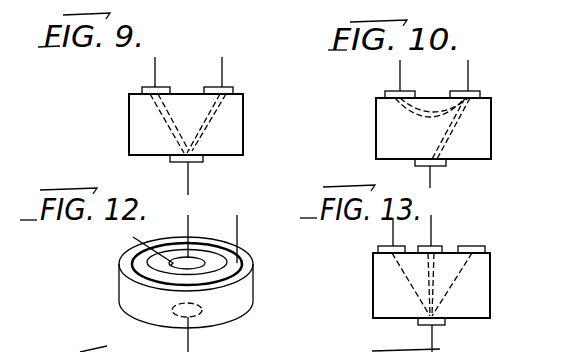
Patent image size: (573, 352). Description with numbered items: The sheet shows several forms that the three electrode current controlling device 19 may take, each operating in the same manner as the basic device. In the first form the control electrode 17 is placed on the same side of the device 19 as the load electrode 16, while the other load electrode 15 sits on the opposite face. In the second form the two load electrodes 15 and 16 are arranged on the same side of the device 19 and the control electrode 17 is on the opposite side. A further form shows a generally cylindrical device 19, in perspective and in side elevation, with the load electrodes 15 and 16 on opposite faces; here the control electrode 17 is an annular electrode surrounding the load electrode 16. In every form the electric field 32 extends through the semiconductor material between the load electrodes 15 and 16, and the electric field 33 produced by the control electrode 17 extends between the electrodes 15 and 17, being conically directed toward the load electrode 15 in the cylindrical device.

In FIG. 9, the load electrode 15 is at (170, 160).
In FIG. 10, the load electrode 15 is at (480, 91).
In FIG. 12, the load electrode 15 is at (172, 310).
In FIG. 13, the load electrode 15 is at (418, 322).
In FIG. 9, the load electrode 16 is at (148, 86).
In FIG. 10, the load electrode 16 is at (393, 93).
In FIG. 12, the load electrode 16 is at (88, 243).
In FIG. 13, the load electrode 16 is at (437, 247).
In FIG. 9, the control electrode 17 is at (235, 87).
In FIG. 10, the control electrode 17 is at (443, 166).
In FIG. 12, the control electrode 17 is at (140, 262).
In FIG. 13, the control electrode 17 is at (378, 248).
In FIG. 9, the three electrode current controlling device 19 is at (233, 115).
In FIG. 10, the three electrode current controlling device 19 is at (473, 117).
In FIG. 12, the three electrode current controlling device 19 is at (233, 300).
In FIG. 13, the three electrode current controlling device 19 is at (472, 302).
In FIG. 9, the electric field 32 is at (163, 118).
In FIG. 10, the electric field 32 is at (400, 108).
In FIG. 13, the electric field 32 is at (447, 275).
In FIG. 9, the electric field 33 is at (197, 130).
In FIG. 10, the electric field 33 is at (453, 138).
In FIG. 13, the electric field 33 is at (410, 281).